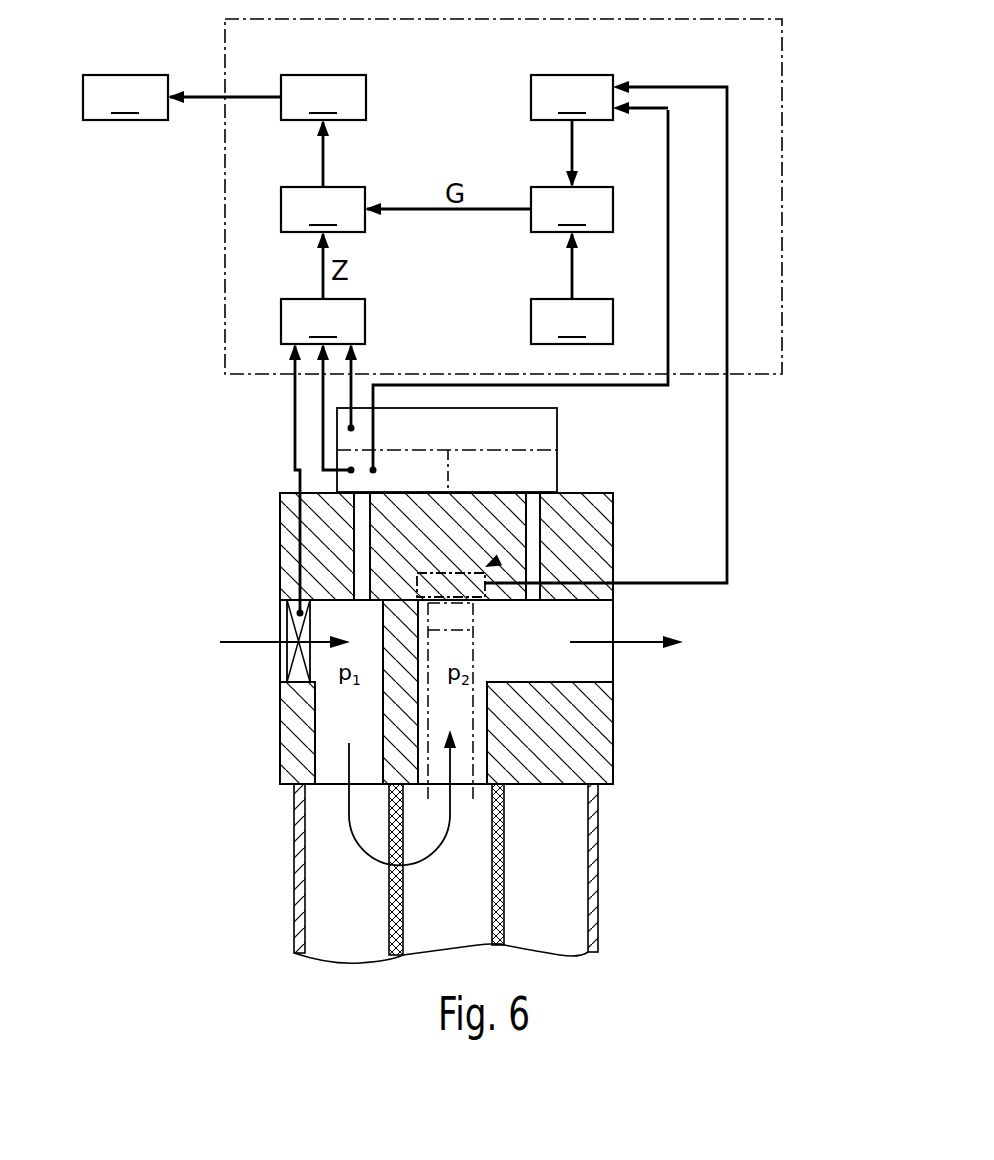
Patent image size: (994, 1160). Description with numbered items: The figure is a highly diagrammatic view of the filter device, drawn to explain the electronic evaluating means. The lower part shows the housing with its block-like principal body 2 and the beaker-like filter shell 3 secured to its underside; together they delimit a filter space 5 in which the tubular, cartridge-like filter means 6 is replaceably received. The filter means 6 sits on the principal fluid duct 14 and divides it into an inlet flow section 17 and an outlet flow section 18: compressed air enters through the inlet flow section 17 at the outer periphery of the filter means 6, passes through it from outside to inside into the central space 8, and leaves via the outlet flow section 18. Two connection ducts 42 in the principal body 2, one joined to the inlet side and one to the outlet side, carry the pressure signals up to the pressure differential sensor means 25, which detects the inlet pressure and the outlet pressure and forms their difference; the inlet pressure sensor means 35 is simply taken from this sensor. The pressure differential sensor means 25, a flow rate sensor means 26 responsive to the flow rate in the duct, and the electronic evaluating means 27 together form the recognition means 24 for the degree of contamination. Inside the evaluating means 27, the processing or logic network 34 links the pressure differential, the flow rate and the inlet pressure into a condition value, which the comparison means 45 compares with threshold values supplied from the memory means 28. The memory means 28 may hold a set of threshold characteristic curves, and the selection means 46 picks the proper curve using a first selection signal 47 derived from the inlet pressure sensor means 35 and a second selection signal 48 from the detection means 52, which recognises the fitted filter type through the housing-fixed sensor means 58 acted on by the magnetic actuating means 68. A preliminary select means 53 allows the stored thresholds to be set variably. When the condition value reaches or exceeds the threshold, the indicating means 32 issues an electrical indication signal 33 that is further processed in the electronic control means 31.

The principal body 2 is at (297, 740).
The filter shell 3 is at (600, 834).
The filter space 5 is at (317, 887).
The filter means 6 is at (500, 912).
The central space 8 is at (473, 842).
The principal fluid duct 14 is at (320, 798).
The inlet flow section 17 is at (350, 617).
The outlet flow section 18 is at (605, 665).
The recognition means 24 is at (275, 381).
The pressure differential sensor means 25 is at (567, 441).
The flow rate sensor means 26 is at (272, 658).
The electronic evaluating means 27 is at (782, 163).
The memory means 28 is at (572, 209).
The electronic control means 31 is at (125, 97).
The indicating means 32 is at (323, 97).
The indication signal 33 is at (235, 97).
The processing or logic network 34 is at (323, 321).
The inlet pressure sensor means 35 is at (348, 495).
The connection ducts 42 is at (533, 527).
The comparison means 45 is at (323, 209).
The selection means 46 is at (572, 97).
The first selection signal 47 is at (668, 200).
The second selection signal 48 is at (727, 232).
The detection means 52 is at (493, 563).
The preliminary select means 53 is at (572, 321).
The sensor means 58 is at (493, 575).
The actuating means 68 is at (470, 613).